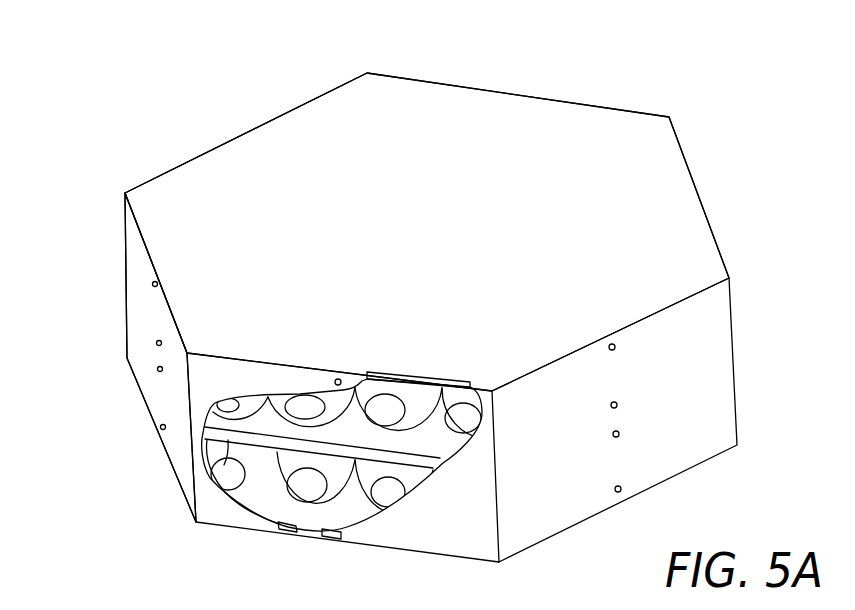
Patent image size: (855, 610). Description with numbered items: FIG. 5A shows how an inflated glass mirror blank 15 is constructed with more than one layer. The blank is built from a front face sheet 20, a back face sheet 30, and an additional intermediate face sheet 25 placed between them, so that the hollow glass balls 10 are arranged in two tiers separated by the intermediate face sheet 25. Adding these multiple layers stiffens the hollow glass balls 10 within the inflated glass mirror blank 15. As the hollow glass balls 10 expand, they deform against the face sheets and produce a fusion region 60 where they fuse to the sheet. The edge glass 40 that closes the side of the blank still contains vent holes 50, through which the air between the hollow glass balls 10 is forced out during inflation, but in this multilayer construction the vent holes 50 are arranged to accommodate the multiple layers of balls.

The inflated glass mirror blank 15 is at (118, 115).
The back face sheet 30 is at (521, 117).
The edge glass 40 is at (139, 305).
The vent holes 50 is at (617, 404).
The fusion region 60 is at (390, 406).
The intermediate face sheet 25 is at (210, 465).
The front face sheet 20 is at (303, 535).
The hollow glass balls 10 is at (343, 493).